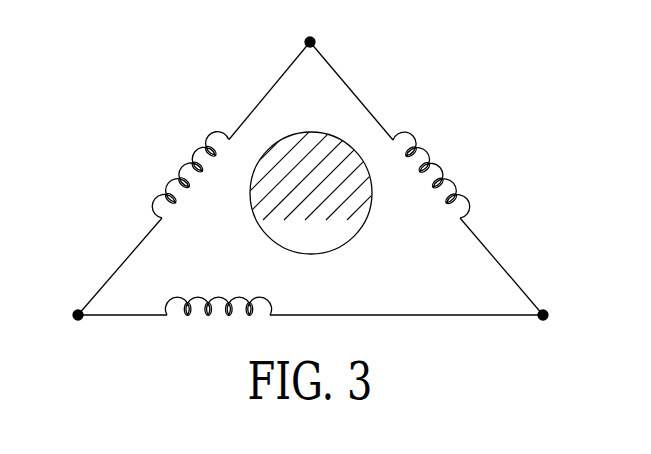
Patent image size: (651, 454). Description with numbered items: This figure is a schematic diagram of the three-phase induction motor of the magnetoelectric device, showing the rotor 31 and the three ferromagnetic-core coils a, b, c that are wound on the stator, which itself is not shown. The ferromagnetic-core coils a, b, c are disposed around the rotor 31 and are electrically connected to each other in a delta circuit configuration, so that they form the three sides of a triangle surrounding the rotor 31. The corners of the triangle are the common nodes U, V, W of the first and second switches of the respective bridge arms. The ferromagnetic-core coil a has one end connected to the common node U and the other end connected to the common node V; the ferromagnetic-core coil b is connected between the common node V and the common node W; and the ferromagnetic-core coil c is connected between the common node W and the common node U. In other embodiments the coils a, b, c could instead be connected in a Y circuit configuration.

The rotor 31 is at (341, 141).
The ferromagnetic-core coil a is at (188, 173).
The ferromagnetic-core coil b is at (433, 173).
The ferromagnetic-core coil c is at (218, 318).
The common node U is at (309, 27).
The common node V is at (64, 313).
The common node W is at (561, 313).